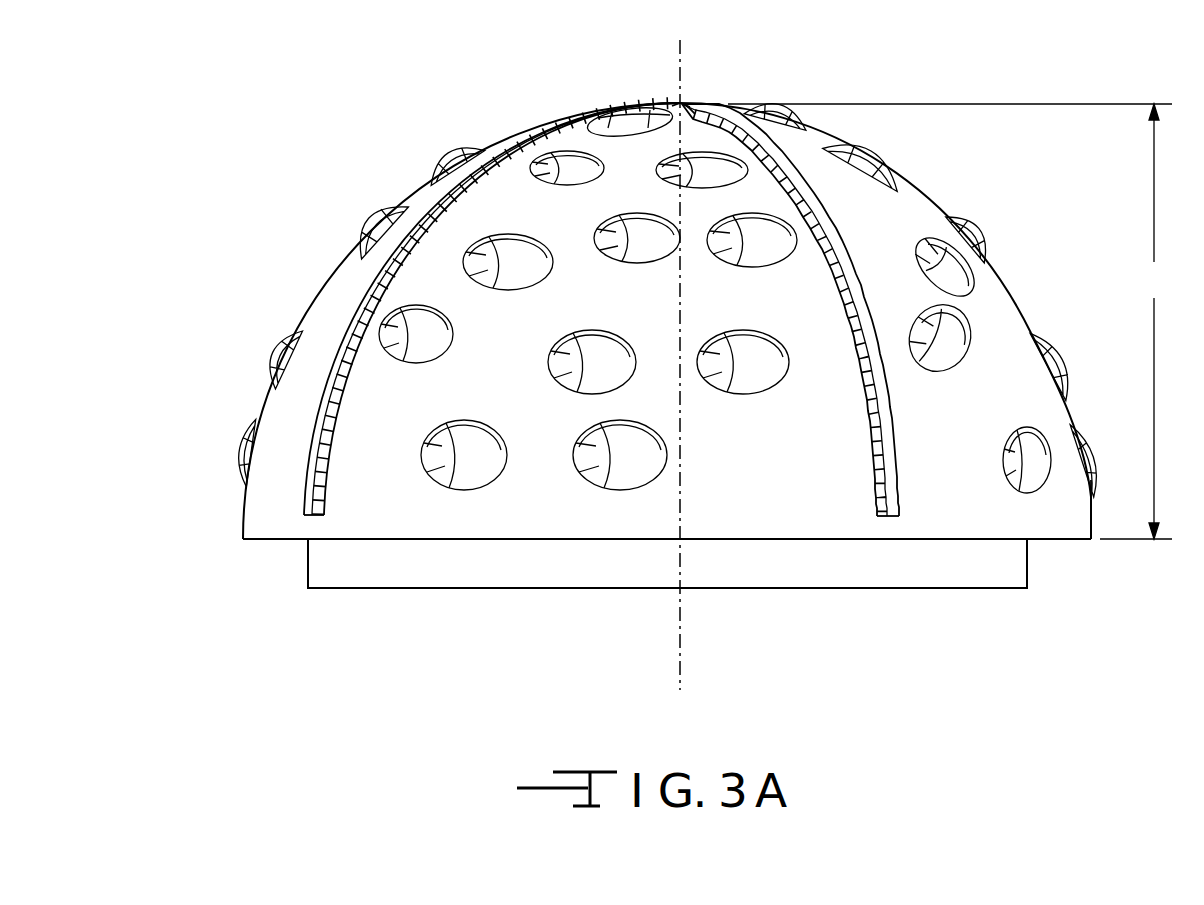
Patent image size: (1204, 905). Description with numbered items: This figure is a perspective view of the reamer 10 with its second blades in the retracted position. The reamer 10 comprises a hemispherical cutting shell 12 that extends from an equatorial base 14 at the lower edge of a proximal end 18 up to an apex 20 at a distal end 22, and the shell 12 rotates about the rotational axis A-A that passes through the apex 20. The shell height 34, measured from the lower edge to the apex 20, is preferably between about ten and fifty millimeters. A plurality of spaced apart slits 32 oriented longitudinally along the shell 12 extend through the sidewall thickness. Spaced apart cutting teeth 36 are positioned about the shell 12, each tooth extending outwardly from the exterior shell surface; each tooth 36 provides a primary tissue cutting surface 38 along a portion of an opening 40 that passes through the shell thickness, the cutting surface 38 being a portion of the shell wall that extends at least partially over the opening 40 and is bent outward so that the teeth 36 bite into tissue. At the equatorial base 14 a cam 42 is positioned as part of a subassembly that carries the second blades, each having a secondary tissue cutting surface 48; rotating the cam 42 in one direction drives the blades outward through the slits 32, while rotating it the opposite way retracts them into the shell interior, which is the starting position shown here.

The reamer 10 is at (390, 105).
The hemispherical cutting shell 12 is at (336, 302).
The equatorial base 14 is at (1088, 545).
The proximal end 18 is at (1070, 520).
The apex 20 is at (683, 104).
The distal end 22 is at (693, 112).
The slits 32 is at (333, 414).
The shell height 34 is at (950, 321).
The cutting teeth 36 is at (614, 262).
The primary tissue cutting surface 38 is at (506, 289).
The opening 40 is at (548, 244).
The cam 42 is at (976, 575).
The secondary tissue cutting surface 48 is at (320, 436).